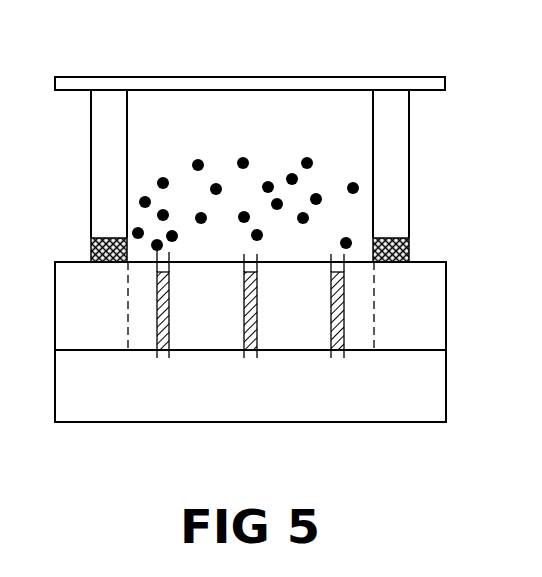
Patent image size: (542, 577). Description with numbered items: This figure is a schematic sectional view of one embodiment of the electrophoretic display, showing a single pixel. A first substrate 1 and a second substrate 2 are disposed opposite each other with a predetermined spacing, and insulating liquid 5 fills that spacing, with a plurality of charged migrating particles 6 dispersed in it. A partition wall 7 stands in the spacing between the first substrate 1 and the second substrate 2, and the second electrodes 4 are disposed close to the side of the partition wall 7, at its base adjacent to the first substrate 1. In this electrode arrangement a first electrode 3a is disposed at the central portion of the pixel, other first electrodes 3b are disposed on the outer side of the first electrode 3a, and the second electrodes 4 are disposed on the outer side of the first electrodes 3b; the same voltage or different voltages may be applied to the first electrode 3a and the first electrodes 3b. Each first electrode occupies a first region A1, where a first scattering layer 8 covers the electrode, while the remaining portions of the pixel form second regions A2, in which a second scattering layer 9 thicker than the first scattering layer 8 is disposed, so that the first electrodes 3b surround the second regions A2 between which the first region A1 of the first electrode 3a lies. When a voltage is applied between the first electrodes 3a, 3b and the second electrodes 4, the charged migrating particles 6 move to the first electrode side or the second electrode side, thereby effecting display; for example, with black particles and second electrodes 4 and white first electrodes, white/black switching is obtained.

The first substrate 1 is at (436, 392).
The second substrate 2 is at (440, 83).
The first electrode 3a is at (232, 266).
The first electrodes 3b is at (150, 323).
The second electrode 4 is at (92, 248).
The insulating liquid 5 is at (341, 110).
The charged migrating particles 6 is at (165, 181).
The partition wall 7 is at (93, 163).
The first scattering layer 8 is at (157, 272).
The second scattering layer 9 is at (436, 298).
The first region A1 is at (333, 366).
The second region A2 is at (157, 353).